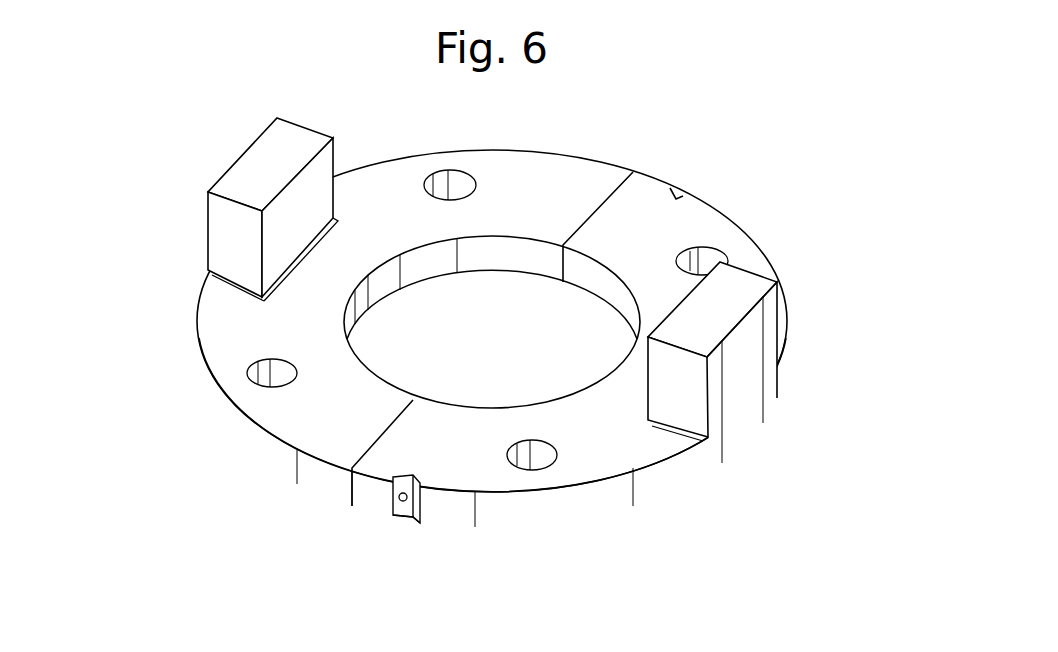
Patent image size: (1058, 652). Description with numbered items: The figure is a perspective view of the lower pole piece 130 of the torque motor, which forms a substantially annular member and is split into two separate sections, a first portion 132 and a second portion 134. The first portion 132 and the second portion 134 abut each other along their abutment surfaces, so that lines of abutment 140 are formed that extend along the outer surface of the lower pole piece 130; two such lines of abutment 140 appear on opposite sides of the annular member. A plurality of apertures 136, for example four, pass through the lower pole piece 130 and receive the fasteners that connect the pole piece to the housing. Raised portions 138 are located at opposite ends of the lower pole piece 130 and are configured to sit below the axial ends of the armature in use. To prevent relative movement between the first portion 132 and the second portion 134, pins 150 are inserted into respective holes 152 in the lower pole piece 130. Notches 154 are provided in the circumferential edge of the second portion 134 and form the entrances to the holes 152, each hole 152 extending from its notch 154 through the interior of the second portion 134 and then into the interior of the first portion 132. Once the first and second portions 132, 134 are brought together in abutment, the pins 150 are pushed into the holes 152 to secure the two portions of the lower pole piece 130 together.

The lower pole piece 130 is at (501, 317).
The first portion 132 is at (538, 153).
The second portion 134 is at (693, 232).
The apertures 136 is at (453, 177).
The raised portions 138 is at (263, 165).
The lines of abutment 140 is at (600, 205).
The pins 150 is at (400, 494).
The holes 152 is at (395, 482).
The notches 154 is at (677, 193).